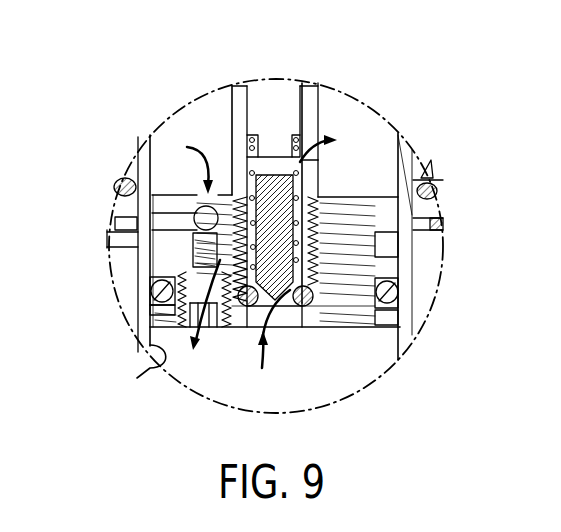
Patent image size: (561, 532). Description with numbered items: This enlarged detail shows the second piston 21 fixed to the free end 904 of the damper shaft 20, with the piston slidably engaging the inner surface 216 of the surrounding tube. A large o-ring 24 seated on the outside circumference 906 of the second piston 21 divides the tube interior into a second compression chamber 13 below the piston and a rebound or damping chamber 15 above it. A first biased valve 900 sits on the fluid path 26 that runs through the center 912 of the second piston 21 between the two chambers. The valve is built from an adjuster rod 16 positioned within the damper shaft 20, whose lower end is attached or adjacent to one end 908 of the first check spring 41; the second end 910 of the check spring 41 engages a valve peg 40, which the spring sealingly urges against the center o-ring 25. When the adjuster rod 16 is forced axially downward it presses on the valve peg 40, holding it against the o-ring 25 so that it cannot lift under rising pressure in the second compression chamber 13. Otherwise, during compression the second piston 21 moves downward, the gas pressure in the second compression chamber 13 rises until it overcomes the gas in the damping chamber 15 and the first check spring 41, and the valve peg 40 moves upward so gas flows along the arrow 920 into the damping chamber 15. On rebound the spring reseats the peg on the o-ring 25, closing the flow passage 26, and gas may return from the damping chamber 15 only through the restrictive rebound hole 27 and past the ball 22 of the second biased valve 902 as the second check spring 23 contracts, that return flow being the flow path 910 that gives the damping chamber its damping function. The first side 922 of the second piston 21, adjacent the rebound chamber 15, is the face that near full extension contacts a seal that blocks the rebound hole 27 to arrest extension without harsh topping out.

The second compression chamber 13 is at (232, 400).
The damping chamber 15 is at (350, 117).
The adjuster rod 16 is at (275, 88).
The damper shaft 20 is at (317, 103).
The second piston 21 is at (385, 302).
The ball 22 is at (192, 217).
The second check spring 23 is at (107, 240).
The large o-ring 24 is at (178, 266).
The center o-ring 25 is at (310, 303).
The fluid path 26 is at (283, 320).
The rebound hole 27 is at (135, 160).
The valve peg 40 is at (287, 243).
The first check spring 41 is at (250, 170).
The inner surface 216 is at (137, 378).
The first biased valve 900 is at (335, 266).
The second biased valve 902 is at (148, 266).
The free end 904 is at (385, 208).
The outside circumference 906 is at (272, 147).
The first end of first check spring 908 is at (243, 128).
The flow path 910 is at (197, 195).
The center of second piston 912 is at (282, 343).
The flow path arrow 920 is at (262, 360).
The first side of second piston 922 is at (343, 195).